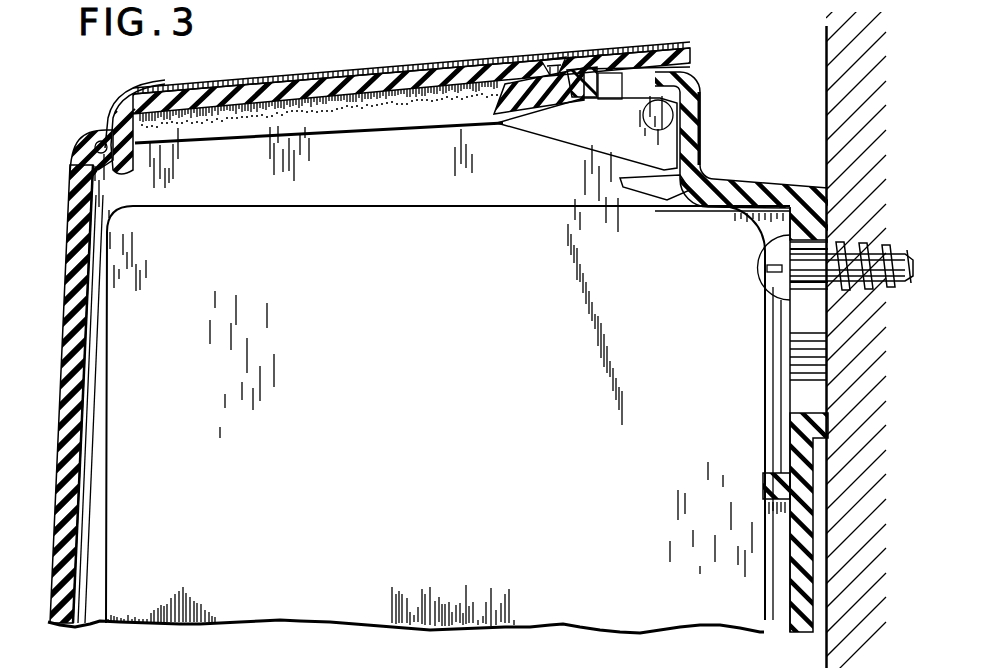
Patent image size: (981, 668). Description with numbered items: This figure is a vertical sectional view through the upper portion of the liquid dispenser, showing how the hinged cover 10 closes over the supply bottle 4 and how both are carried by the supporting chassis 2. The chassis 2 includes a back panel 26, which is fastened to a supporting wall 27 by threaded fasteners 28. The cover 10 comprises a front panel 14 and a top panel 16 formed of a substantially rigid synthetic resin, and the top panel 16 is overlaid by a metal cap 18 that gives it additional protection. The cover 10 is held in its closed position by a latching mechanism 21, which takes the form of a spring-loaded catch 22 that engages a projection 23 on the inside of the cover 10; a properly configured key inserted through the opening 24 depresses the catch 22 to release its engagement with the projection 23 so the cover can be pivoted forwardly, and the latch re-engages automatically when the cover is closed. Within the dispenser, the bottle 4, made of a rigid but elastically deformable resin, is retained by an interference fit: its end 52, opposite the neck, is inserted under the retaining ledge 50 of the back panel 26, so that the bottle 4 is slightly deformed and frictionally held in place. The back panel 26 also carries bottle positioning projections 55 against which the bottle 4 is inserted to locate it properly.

The supporting chassis 2 is at (766, 170).
The supply bottle 4 is at (400, 220).
The hinged cover 10 is at (61, 238).
The front panel 14 is at (64, 472).
The top panel 16 is at (308, 80).
The metal cap 18 is at (408, 66).
The latching mechanism 21 is at (560, 153).
The spring-loaded catch 22 is at (511, 126).
The projection 23 is at (612, 100).
The opening 24 is at (556, 56).
The back panel 26 is at (786, 608).
The supporting wall 27 is at (843, 147).
The threaded fasteners 28 is at (887, 293).
The retaining ledge 50 is at (650, 190).
The end of the bottle 52 is at (262, 208).
The bottle positioning projections 55 is at (774, 490).